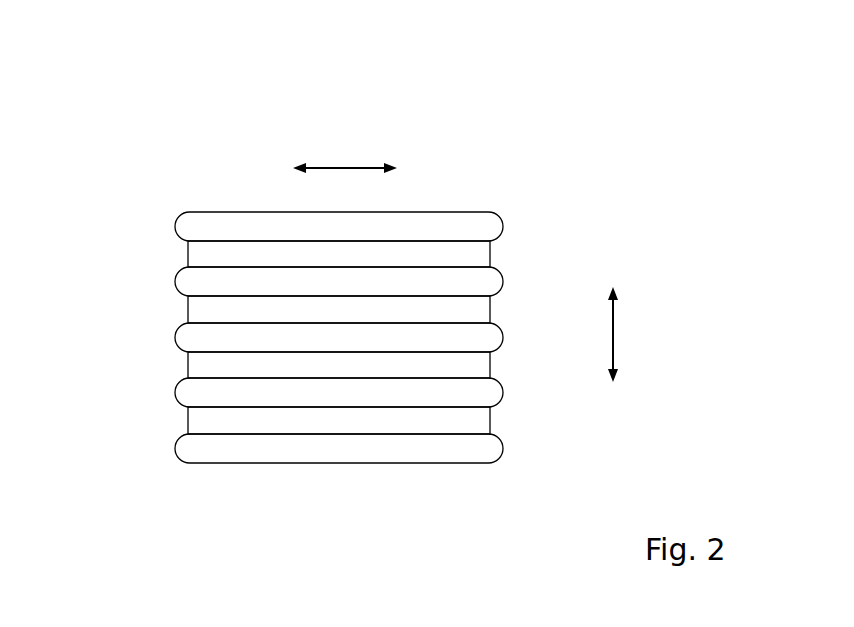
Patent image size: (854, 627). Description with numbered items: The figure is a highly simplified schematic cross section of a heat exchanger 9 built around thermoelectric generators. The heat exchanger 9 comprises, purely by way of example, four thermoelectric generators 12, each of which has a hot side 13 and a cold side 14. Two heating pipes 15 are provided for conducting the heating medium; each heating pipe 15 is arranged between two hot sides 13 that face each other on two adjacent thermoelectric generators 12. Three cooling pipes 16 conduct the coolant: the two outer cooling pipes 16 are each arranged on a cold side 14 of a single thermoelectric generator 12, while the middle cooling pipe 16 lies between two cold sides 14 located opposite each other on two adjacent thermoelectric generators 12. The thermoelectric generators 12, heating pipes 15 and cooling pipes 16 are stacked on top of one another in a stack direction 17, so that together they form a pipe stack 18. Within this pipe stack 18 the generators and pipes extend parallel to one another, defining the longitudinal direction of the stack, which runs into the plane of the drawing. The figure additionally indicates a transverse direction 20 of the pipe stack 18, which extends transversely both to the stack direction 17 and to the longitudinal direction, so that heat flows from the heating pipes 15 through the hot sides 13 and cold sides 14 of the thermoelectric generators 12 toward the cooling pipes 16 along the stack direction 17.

The heat exchanger 9 is at (553, 190).
The thermoelectric generator 12 is at (500, 253).
The hot side 13 is at (445, 269).
The cold side 14 is at (427, 240).
The heating pipe 15 is at (165, 280).
The cooling pipe 16 is at (165, 225).
The stack direction 17 is at (613, 330).
The pipe stack 18 is at (219, 188).
The transverse direction 20 is at (345, 166).